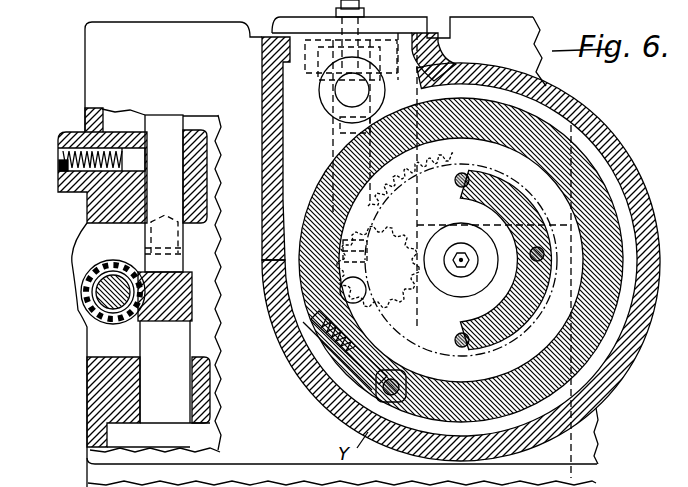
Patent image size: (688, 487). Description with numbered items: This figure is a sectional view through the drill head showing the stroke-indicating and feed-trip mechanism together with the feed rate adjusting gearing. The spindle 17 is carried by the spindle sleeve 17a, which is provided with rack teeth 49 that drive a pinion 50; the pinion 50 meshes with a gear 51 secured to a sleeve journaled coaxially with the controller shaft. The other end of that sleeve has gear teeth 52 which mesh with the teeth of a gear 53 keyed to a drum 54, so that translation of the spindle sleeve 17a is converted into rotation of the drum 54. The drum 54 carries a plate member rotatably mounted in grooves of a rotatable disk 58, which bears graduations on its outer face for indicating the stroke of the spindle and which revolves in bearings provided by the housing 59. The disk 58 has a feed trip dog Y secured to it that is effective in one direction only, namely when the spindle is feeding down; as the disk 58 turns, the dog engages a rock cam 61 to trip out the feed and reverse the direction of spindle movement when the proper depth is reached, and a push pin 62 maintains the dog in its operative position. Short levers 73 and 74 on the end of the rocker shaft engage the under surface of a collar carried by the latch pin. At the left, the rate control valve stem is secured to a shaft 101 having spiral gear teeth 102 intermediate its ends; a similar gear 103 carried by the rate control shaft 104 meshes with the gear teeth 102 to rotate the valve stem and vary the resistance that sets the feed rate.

The shaft 101 is at (165, 118).
The spiral gear teeth 102 is at (193, 298).
The gear 103 is at (84, 274).
The rate control shaft 104 is at (100, 291).
The short lever 73 is at (322, 92).
The short lever 74 is at (372, 84).
The rock cam 61 is at (383, 124).
The rack teeth 49 is at (432, 163).
The pinion 50 is at (415, 170).
The gear 51 is at (294, 260).
The rotatable disk 58 is at (532, 130).
The housing 59 is at (600, 130).
The spindle sleeve 17a is at (571, 137).
The section line 17 is at (573, 430).
The gear teeth 52 is at (358, 331).
The gear 53 is at (386, 372).
The drum 54 is at (512, 325).
The push pin 62 is at (350, 400).